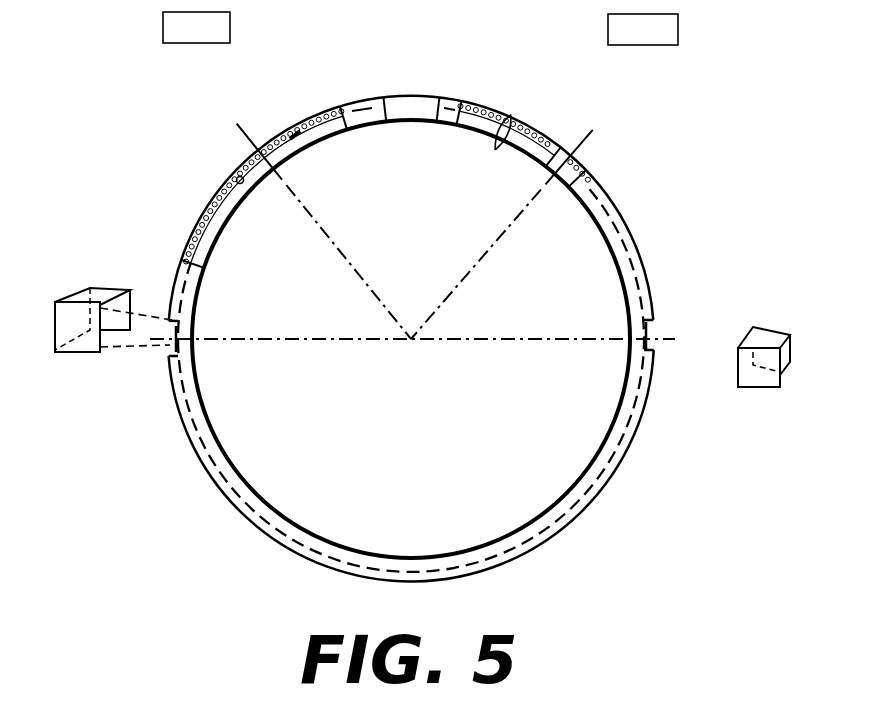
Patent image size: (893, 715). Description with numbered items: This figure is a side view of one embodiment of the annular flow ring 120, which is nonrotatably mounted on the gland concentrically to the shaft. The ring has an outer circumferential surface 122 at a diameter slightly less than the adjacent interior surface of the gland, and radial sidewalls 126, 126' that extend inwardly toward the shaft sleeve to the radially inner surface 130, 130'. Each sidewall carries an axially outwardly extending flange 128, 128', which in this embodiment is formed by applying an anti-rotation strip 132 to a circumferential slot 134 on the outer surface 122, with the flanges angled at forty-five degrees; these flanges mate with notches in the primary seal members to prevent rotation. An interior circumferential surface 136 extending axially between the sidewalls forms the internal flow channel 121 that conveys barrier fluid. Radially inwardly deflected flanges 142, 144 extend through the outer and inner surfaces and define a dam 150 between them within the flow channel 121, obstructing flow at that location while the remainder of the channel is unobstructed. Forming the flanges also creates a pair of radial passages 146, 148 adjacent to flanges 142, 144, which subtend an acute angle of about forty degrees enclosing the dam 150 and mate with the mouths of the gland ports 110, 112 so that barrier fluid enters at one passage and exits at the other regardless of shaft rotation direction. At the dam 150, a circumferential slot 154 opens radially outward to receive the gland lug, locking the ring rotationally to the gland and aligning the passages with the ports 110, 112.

The radial port 110 is at (213, 38).
The radial port 112 is at (660, 41).
The annular ring 120 is at (710, 274).
The internal flow channel 121 is at (567, 190).
The outer circumferential surface 122 is at (622, 213).
The radial sidewall 126 is at (234, 368).
The radial sidewall 126' is at (252, 236).
The flange 128 is at (112, 340).
The flange 128' is at (146, 266).
The radially inner surface 130 is at (411, 339).
The radially inner surface 130' is at (318, 201).
The anti-rotation strip 132 is at (50, 318).
The circumferential slot 134 is at (178, 330).
The interior circumferential surface 136 is at (238, 170).
The radially inwardly deflected flange 142 is at (302, 126).
The radially inwardly deflected flange 144 is at (500, 147).
The radial passage 146 is at (275, 132).
The radial passage 148 is at (560, 150).
The dam 150 is at (445, 127).
The circumferential slot 154 is at (397, 113).